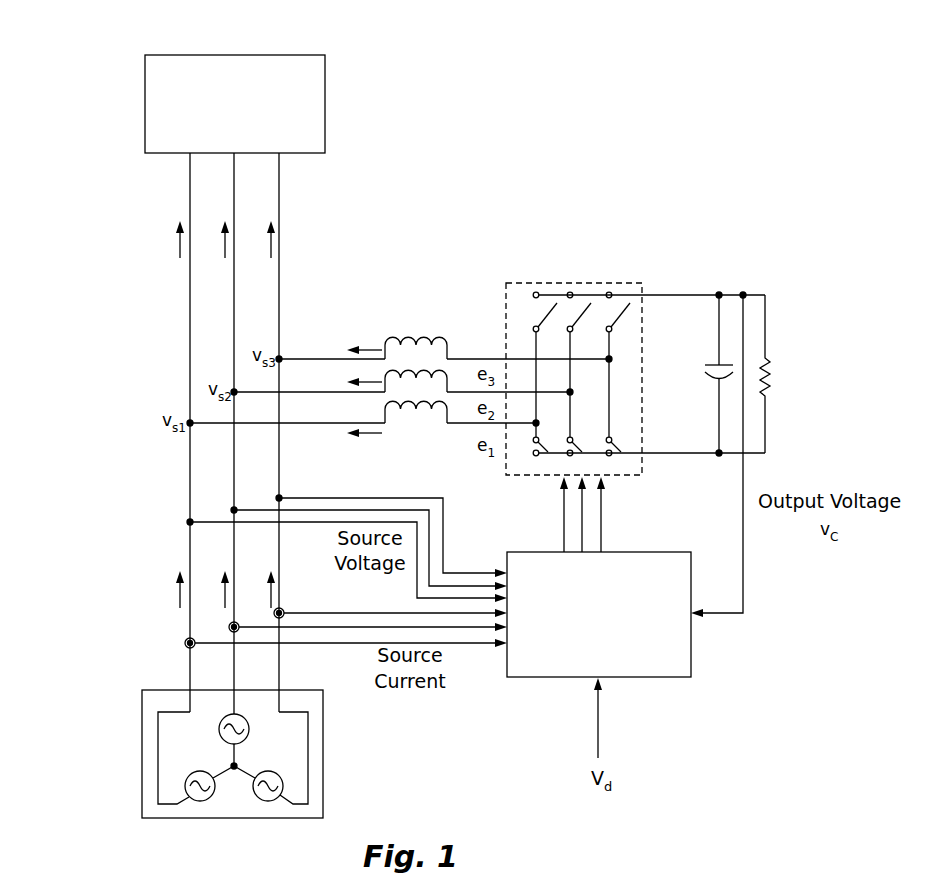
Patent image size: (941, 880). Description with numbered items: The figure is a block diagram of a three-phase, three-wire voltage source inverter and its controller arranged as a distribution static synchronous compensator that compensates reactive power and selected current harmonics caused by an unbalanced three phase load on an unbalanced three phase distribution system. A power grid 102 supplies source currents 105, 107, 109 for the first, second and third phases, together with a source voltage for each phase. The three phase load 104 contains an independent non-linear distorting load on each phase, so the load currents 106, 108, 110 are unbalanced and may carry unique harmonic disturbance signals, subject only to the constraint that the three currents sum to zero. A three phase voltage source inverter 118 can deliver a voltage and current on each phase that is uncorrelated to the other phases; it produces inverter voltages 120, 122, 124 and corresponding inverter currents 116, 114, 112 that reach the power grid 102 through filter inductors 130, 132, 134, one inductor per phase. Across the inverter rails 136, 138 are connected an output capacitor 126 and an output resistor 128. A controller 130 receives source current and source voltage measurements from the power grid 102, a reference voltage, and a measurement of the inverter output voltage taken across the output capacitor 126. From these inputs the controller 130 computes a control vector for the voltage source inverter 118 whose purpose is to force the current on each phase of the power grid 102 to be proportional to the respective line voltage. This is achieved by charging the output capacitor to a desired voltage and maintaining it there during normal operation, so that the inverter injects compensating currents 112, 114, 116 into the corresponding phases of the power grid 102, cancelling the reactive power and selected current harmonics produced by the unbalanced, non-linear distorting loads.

The power grid 102 is at (325, 757).
The three phase load 104 is at (235, 104).
The source current 105 is at (176, 584).
The load current 106 is at (176, 248).
The source current 107 is at (217, 590).
The load current 108 is at (222, 234).
The source current 109 is at (271, 600).
The load current 110 is at (273, 246).
The inverter current 112 is at (372, 334).
The inverter current 114 is at (364, 396).
The inverter current 116 is at (372, 442).
The three phase voltage source inverter 118 is at (612, 282).
The inverter voltage 120 is at (484, 460).
The inverter voltage 122 is at (454, 428).
The inverter voltage 124 is at (490, 366).
The output capacitor 126 is at (698, 375).
The output resistor 128 is at (772, 391).
The controller 130 is at (398, 411).
The filter inductor 132 is at (437, 368).
The filter inductor 134 is at (418, 335).
The rail of the voltage source inverter 136 is at (623, 458).
The rail of the voltage source inverter 138 is at (631, 290).